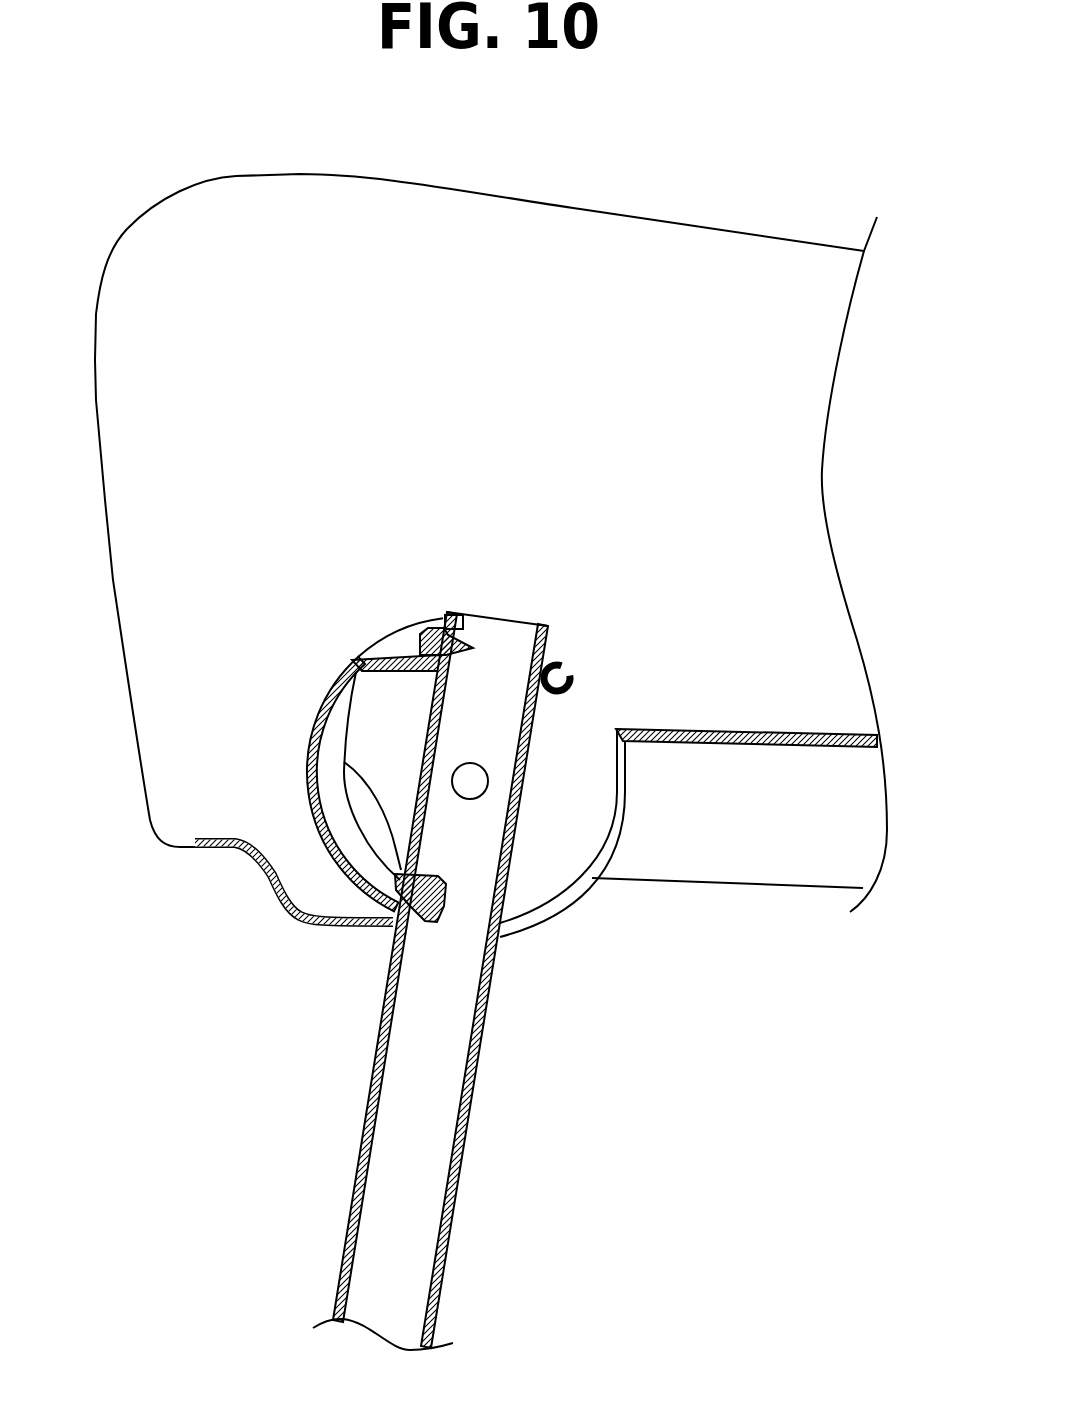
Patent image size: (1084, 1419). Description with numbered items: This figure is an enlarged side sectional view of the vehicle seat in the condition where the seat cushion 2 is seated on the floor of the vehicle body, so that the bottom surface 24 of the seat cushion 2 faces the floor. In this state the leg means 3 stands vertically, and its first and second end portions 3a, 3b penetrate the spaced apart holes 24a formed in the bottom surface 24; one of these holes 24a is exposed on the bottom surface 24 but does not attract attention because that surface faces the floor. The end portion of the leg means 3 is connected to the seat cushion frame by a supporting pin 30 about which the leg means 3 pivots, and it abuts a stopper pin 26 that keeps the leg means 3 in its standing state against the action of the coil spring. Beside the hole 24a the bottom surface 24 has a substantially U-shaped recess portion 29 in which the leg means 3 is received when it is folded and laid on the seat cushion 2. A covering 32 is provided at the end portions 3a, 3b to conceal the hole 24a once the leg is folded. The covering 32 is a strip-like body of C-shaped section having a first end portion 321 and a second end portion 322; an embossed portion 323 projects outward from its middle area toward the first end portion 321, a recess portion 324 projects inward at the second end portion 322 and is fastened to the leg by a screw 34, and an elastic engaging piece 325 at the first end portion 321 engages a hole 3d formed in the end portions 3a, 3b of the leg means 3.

The seat cushion 2 is at (574, 195).
The leg means 3 is at (420, 981).
The first end portion of the leg means 3a is at (501, 898).
The second end portion of the leg means 3b is at (395, 967).
The hole 3d is at (344, 762).
The bottom surface of the seat cushion 24 is at (726, 839).
The hole 24a is at (572, 895).
The stopper pin 26 is at (577, 672).
The U-shaped recess portion 29 is at (832, 767).
The supporting pin 30 is at (470, 778).
The covering 32 is at (261, 748).
The first end portion of the strip-like body 321 is at (380, 930).
The second end portion of the strip-like body 322 is at (433, 617).
The embossed portion 323 is at (313, 727).
The recess portion 324 is at (380, 650).
The elastic engaging piece 325 is at (422, 925).
The screw 34 is at (388, 632).